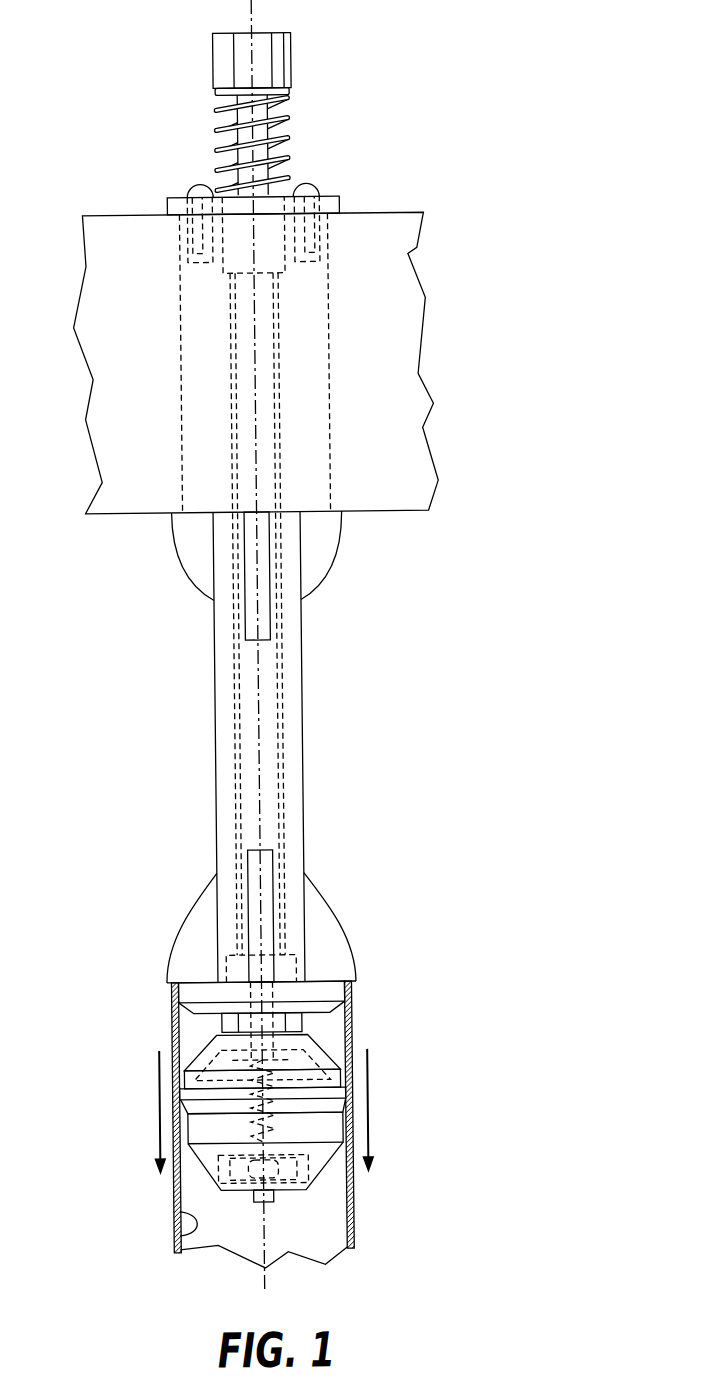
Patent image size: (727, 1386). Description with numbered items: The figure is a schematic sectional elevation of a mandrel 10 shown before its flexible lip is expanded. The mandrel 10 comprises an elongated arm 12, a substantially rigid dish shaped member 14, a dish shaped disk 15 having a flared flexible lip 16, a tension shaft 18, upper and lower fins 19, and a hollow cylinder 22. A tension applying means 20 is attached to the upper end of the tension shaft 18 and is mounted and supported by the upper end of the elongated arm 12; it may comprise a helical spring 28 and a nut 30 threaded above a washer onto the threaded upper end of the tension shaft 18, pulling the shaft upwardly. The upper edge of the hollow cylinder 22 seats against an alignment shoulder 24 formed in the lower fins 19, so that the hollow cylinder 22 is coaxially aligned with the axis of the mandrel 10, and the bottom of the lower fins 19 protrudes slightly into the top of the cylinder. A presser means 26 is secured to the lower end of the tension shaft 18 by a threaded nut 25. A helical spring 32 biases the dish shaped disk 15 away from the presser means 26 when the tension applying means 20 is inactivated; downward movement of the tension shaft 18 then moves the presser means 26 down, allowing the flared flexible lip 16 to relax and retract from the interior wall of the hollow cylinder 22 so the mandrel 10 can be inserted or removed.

The mandrel 10 is at (561, 313).
The elongated arm 12 is at (302, 728).
The substantially rigid dish shaped member 14 is at (329, 1048).
The dish shaped disk 15 is at (333, 1041).
The flared flexible lip 16 is at (318, 1094).
The tension shaft 18 is at (289, 795).
The upper and lower fins 19 is at (193, 567).
The tension applying means 20 is at (438, 97).
The hollow cylinder 22 is at (349, 1188).
The alignment shoulder 24 is at (168, 987).
The threaded nut 25 is at (282, 1195).
The presser means 26 is at (202, 1160).
The helical spring 28 is at (295, 158).
The nut 30 is at (298, 62).
The helical spring 32 is at (248, 1120).